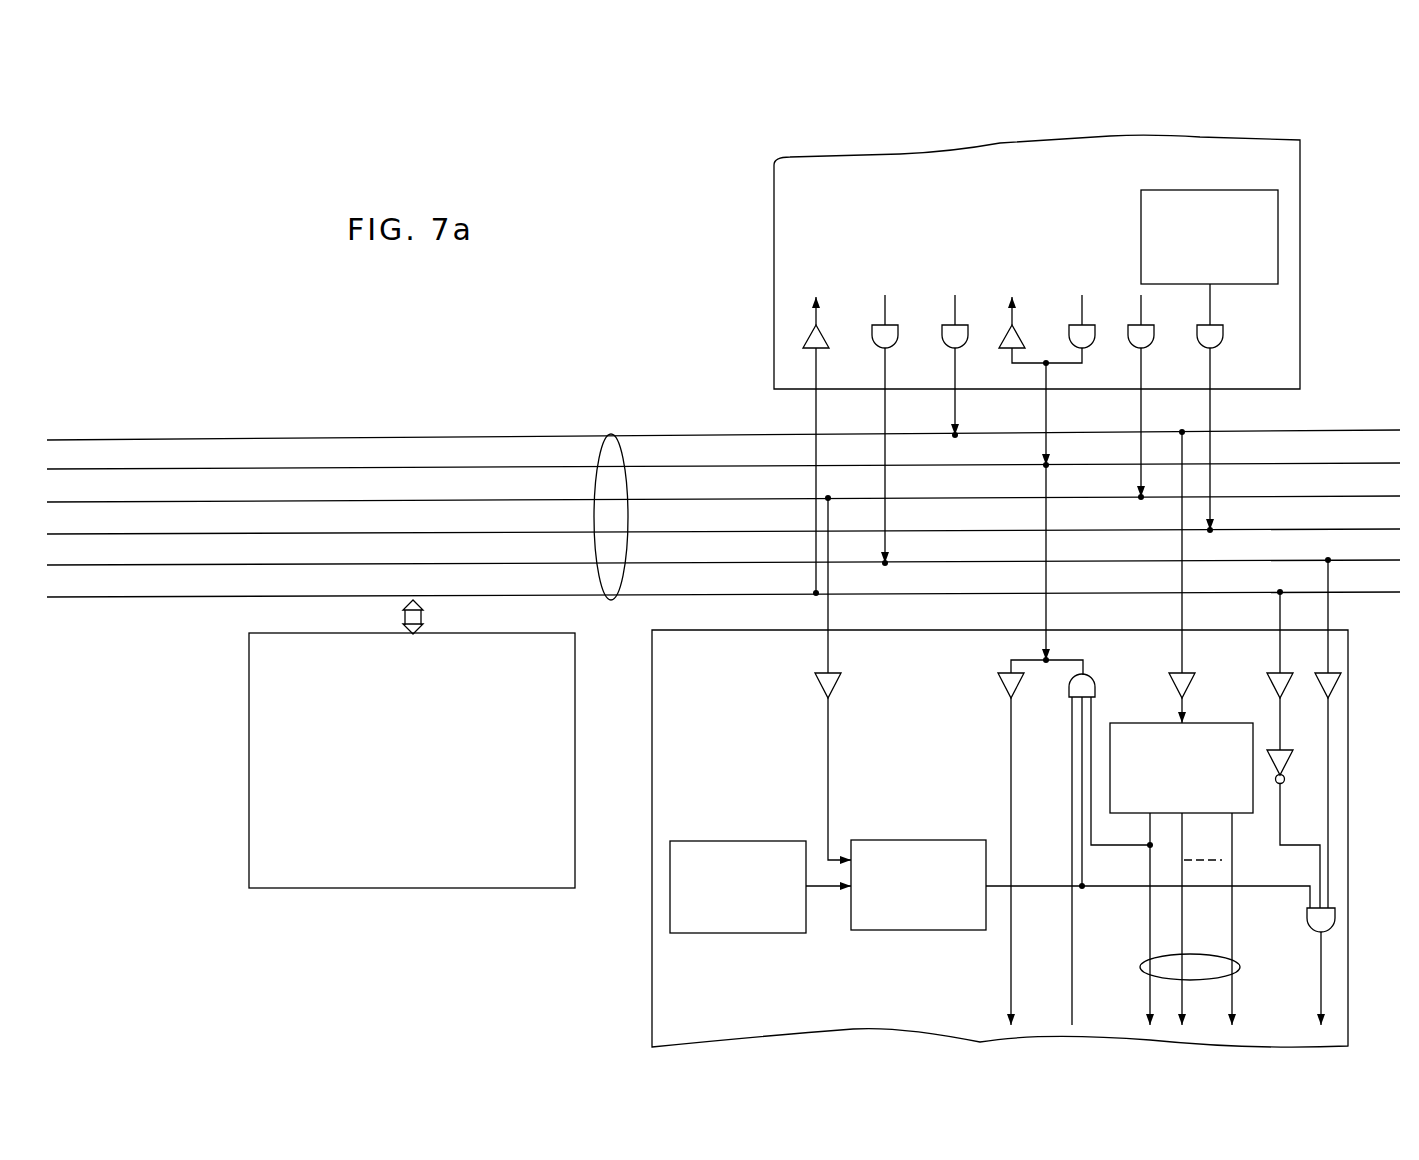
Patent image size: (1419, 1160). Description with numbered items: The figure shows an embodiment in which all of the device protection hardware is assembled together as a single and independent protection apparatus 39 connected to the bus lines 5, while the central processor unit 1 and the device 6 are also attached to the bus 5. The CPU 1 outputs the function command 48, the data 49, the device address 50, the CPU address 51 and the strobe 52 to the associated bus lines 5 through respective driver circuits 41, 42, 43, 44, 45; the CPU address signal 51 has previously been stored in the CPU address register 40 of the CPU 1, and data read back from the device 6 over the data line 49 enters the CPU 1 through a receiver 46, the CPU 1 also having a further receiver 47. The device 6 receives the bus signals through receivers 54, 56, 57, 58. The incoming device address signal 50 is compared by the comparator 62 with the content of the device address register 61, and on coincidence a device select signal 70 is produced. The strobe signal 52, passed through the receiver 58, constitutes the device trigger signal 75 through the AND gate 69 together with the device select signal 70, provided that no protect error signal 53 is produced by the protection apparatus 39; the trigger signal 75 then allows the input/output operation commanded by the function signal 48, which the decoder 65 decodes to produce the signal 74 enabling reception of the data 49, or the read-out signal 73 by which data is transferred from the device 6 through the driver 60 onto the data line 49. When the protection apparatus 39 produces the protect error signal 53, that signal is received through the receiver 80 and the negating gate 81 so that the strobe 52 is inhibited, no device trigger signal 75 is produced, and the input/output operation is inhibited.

The central processor unit 1 is at (774, 300).
The bus lines 5 is at (618, 437).
The device 6 is at (650, 739).
The protection apparatus 39 is at (249, 739).
The CPU address register 40 is at (1141, 226).
The driver circuit 41 is at (1221, 338).
The driver circuit 42 is at (1152, 338).
The driver circuit 43 is at (1107, 332).
The driver circuit 44 is at (940, 344).
The driver circuit 45 is at (911, 332).
The receiver 46 is at (1020, 334).
The receiver 47 is at (826, 332).
The function command signal 48 is at (707, 433).
The data signal 49 is at (707, 465).
The device address signal 50 is at (707, 497).
The CPU address signal 51 is at (707, 529).
The strobe signal 52 is at (707, 561).
The protect error signal 53 is at (707, 592).
The receiver 54 is at (831, 690).
The receiver 56 is at (1002, 689).
The receiver 57 is at (1174, 686).
The receiver 58 is at (1323, 686).
The driver 60 is at (1069, 686).
The device address register 61 is at (737, 834).
The comparator 62 is at (893, 840).
The decoder 65 is at (1203, 813).
The AND gate 69 is at (1308, 923).
The device select signal 70 is at (1049, 900).
The read-out signal 73 is at (1150, 893).
The signal 74 is at (1140, 967).
The device operation trigger signal 75 is at (1318, 968).
The receiver 80 is at (1274, 686).
The negating gate 81 is at (1291, 762).